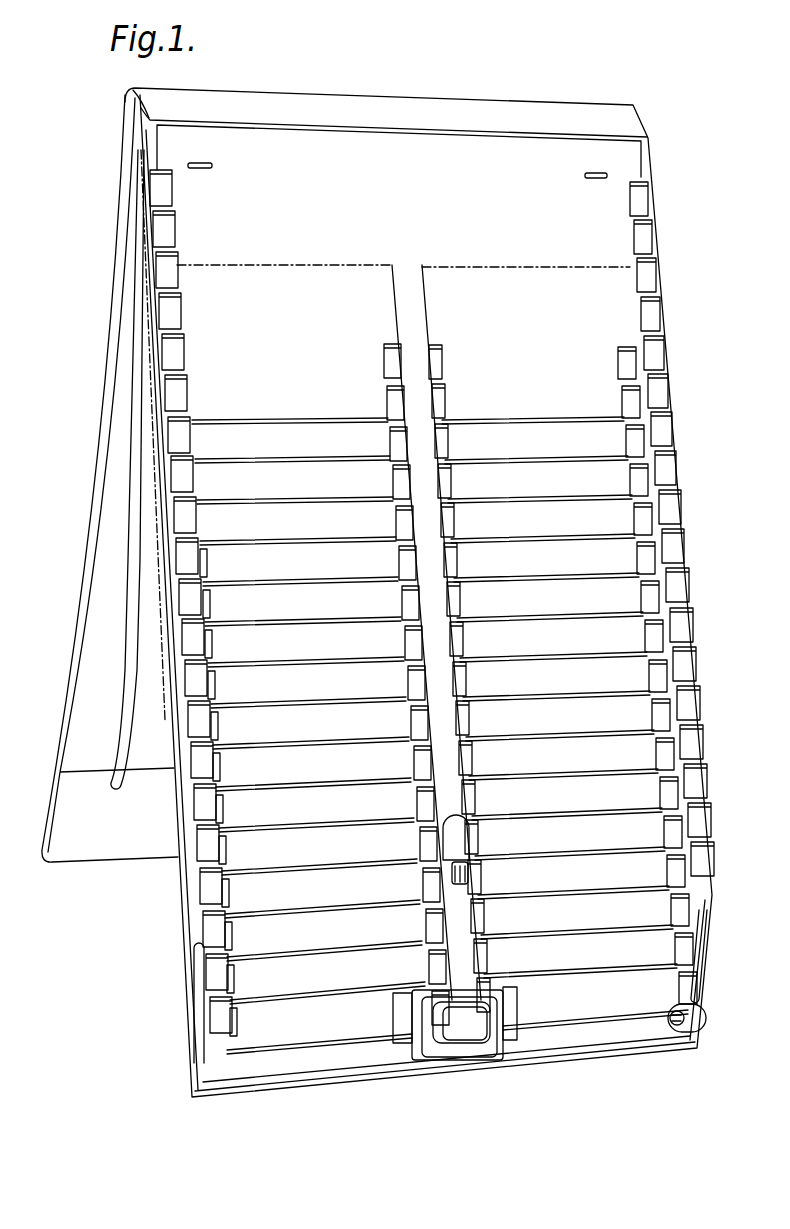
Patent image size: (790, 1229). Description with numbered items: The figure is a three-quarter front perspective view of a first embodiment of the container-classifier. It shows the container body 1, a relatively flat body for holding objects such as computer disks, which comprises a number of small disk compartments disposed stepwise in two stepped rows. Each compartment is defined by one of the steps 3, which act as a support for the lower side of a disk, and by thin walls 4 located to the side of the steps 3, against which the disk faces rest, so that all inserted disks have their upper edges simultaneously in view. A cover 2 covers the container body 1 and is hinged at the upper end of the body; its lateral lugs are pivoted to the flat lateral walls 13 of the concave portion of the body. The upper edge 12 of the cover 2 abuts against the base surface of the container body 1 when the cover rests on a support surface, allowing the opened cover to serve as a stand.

The container body 1 is at (670, 322).
The cover 2 is at (78, 555).
The steps 3 is at (294, 457).
The thin walls 4 is at (212, 733).
The upper edge 12 is at (128, 130).
The flat lateral walls 13 is at (148, 118).